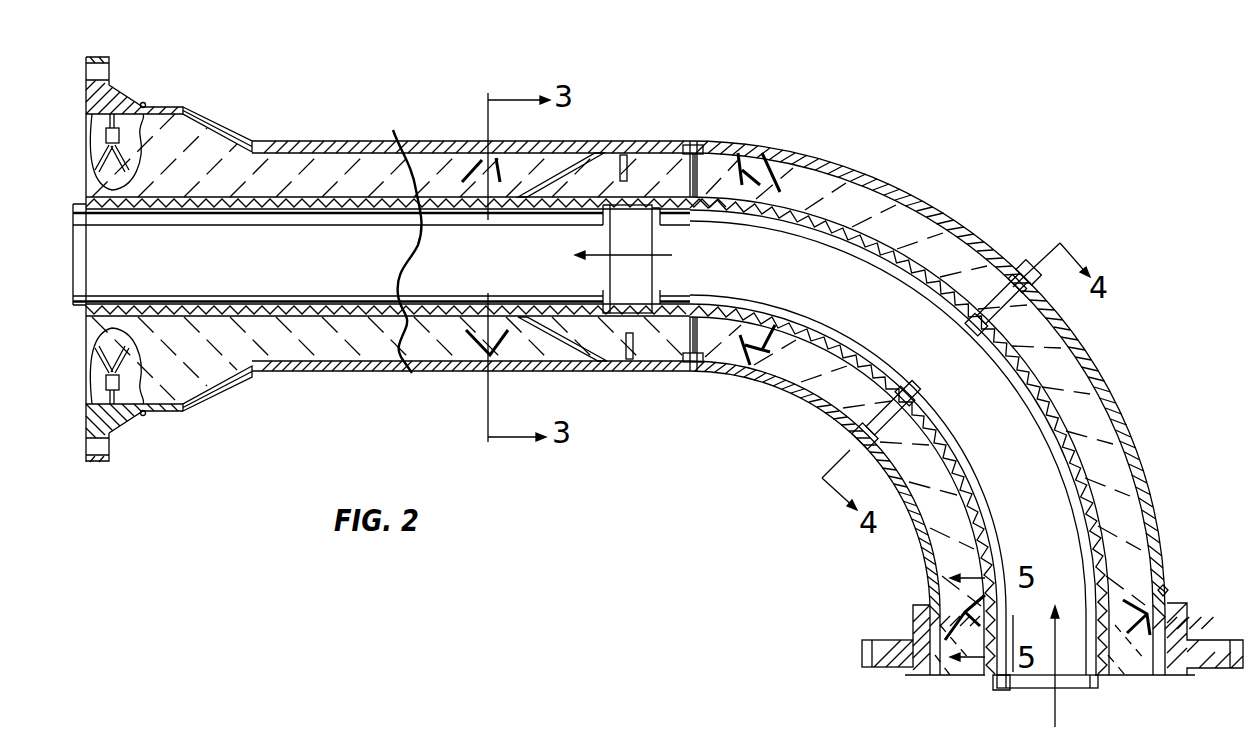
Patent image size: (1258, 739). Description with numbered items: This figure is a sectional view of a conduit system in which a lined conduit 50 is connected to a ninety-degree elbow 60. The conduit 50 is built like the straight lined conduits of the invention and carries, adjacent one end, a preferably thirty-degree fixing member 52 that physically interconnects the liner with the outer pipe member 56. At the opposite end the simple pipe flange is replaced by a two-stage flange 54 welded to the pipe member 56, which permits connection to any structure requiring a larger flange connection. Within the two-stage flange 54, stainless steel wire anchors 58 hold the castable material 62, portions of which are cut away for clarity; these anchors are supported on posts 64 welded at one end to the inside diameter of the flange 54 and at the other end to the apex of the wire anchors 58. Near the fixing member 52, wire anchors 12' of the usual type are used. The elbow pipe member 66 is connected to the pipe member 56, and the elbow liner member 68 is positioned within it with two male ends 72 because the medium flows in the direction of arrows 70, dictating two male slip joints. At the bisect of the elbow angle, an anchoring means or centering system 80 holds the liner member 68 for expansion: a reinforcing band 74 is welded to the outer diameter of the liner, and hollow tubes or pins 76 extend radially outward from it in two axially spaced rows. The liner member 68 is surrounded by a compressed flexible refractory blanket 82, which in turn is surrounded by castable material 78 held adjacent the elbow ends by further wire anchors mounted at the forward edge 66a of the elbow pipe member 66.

The conduit 50 is at (398, 132).
The fixing member 52 is at (568, 372).
The two-stage flange 54 is at (160, 104).
The pipe member 56 is at (318, 140).
The wire anchors 58 is at (128, 358).
The elbow 60 is at (956, 98).
The castable material 62 is at (360, 372).
The posts 64 is at (118, 405).
The elbow pipe member 66 is at (822, 415).
The forward edge 66a is at (928, 682).
The elbow liner member 68 is at (914, 284).
The arrows 70 is at (662, 250).
The male ends 72 is at (668, 312).
The reinforcing band 74 is at (990, 343).
The hollow tubes or pins 76 is at (918, 412).
The castable material 78 is at (1125, 426).
The anchoring means or centering system 80 is at (1026, 340).
The compressed flexible refractory blanket 82 is at (920, 208).
The wire anchors 12' is at (468, 284).